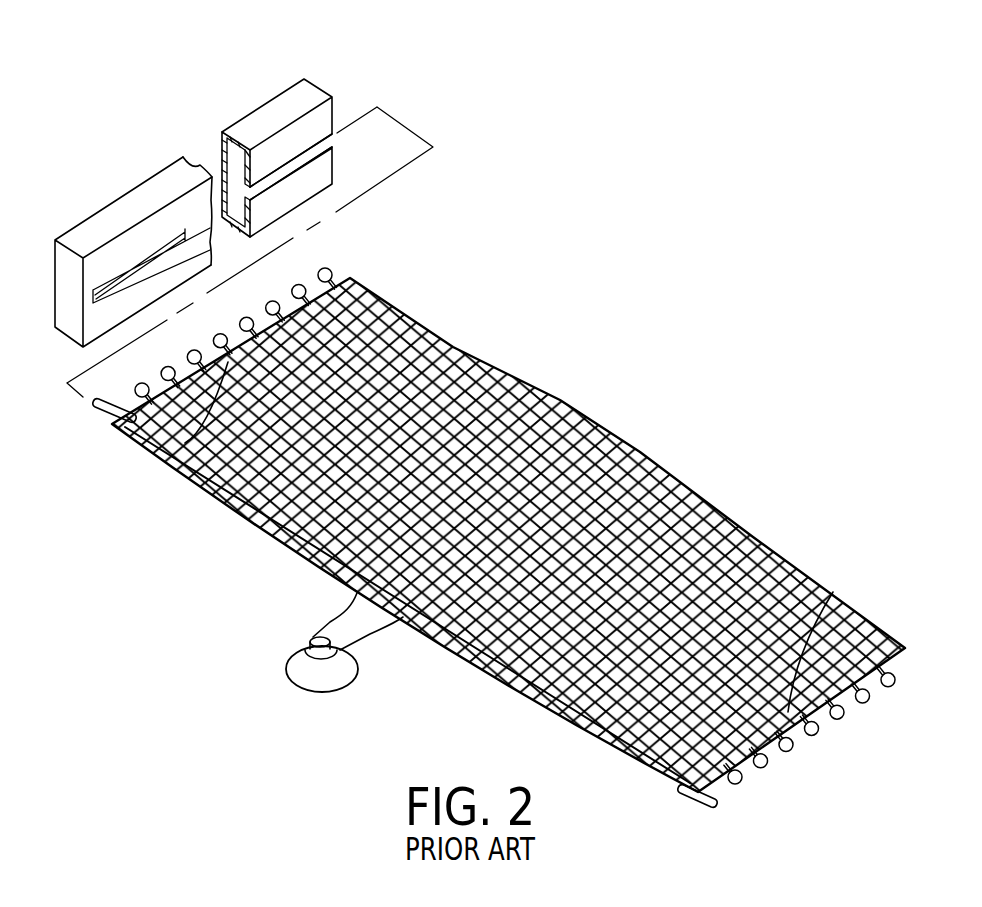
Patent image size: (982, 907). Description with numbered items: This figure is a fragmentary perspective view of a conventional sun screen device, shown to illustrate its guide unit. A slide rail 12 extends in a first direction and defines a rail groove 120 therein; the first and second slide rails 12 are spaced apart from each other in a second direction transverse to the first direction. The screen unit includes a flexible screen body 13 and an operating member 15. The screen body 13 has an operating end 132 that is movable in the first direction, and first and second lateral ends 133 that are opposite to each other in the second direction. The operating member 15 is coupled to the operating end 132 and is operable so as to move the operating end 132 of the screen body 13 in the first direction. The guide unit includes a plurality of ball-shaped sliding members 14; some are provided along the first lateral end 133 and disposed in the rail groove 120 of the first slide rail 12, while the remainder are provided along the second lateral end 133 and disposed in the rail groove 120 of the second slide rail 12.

The slide rail 12 is at (211, 104).
The rail groove 120 is at (288, 175).
The screen body 13 is at (258, 572).
The operating end 132 is at (450, 648).
The lateral end 133 is at (160, 453).
The sliding member 14 is at (812, 730).
The operating member 15 is at (108, 412).